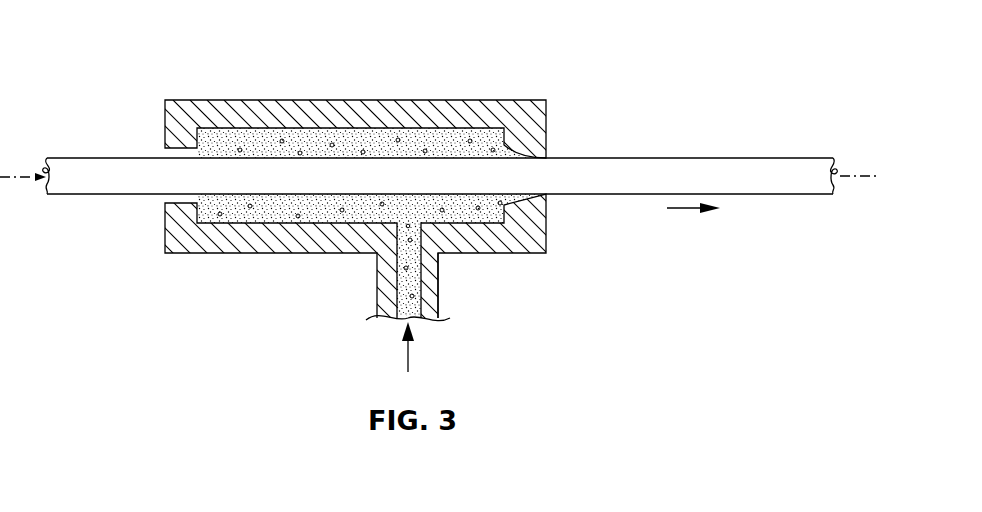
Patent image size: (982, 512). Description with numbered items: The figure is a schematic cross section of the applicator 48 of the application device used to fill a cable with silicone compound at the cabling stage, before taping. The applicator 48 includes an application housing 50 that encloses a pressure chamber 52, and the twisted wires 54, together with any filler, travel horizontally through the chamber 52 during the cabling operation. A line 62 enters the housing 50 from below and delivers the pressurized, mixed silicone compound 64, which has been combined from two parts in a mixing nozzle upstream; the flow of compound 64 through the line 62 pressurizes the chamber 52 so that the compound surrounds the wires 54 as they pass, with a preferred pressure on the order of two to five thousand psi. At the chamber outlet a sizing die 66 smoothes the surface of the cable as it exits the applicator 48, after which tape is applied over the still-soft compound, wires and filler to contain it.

The applicator 48 is at (108, 70).
The application housing 50 is at (537, 237).
The pressure chamber 52 is at (291, 205).
The twisted wires 54 is at (106, 187).
The line 62 is at (440, 297).
The pressurized mixed silicone compound 64 is at (405, 270).
The sizing die 66 is at (548, 157).